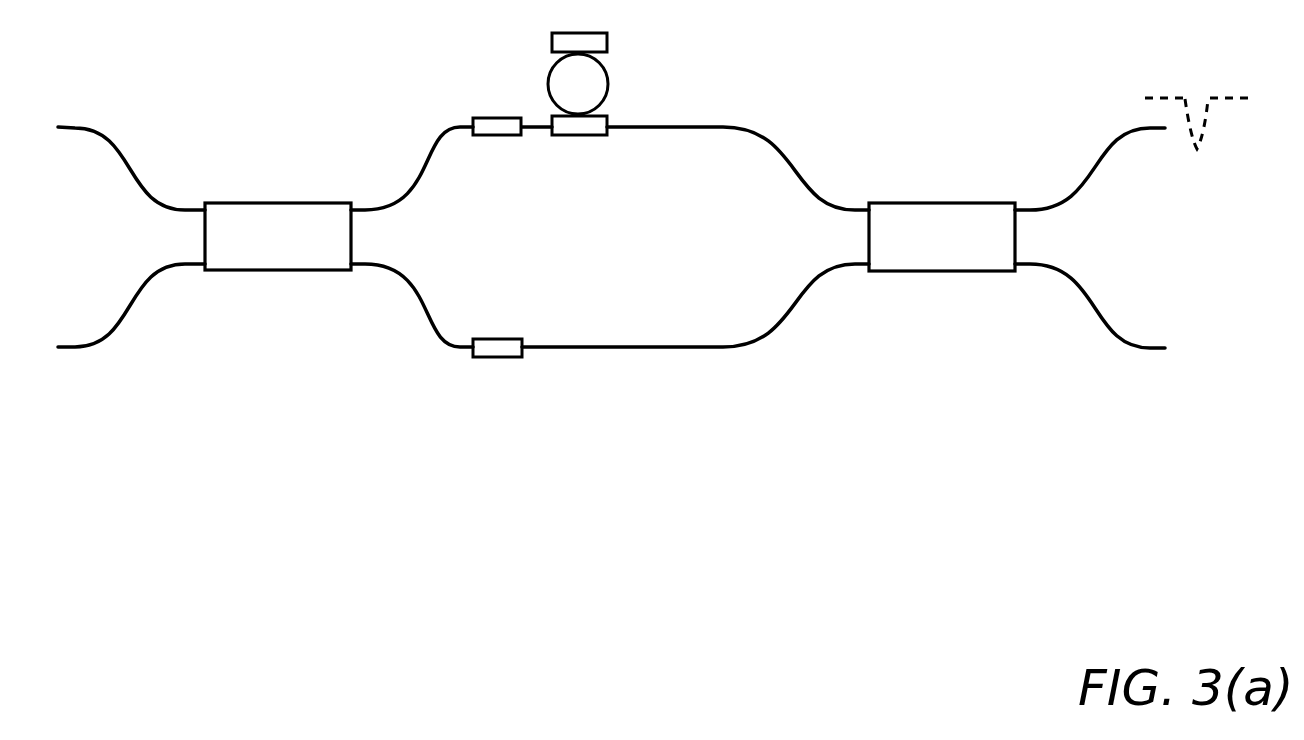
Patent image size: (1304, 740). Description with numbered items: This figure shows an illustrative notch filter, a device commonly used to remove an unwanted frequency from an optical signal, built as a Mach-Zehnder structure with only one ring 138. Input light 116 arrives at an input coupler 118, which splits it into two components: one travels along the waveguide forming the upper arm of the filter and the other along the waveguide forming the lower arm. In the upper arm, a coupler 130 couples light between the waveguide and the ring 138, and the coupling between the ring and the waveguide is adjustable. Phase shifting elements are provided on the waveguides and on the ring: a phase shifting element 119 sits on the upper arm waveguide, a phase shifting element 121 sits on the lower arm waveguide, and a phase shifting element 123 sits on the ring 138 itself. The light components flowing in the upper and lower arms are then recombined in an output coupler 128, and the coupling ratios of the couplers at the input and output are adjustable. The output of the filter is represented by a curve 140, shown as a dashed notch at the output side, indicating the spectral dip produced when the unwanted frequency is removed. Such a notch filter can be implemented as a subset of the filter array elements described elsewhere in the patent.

The input light 116 is at (60, 127).
The coupler 118 is at (300, 271).
The phase shifting element 119 is at (473, 125).
The phase shifting element 121 is at (473, 356).
The phase shifting element 123 is at (581, 33).
The ring 138 is at (549, 82).
The coupler 130 is at (583, 136).
The coupler 128 is at (934, 272).
The curve 140 is at (1203, 135).